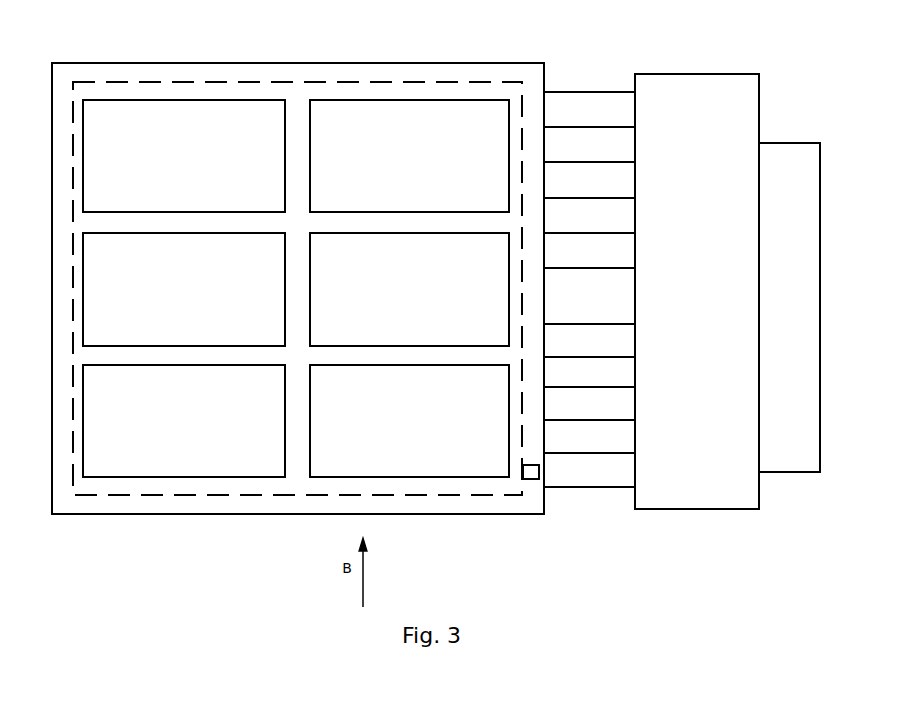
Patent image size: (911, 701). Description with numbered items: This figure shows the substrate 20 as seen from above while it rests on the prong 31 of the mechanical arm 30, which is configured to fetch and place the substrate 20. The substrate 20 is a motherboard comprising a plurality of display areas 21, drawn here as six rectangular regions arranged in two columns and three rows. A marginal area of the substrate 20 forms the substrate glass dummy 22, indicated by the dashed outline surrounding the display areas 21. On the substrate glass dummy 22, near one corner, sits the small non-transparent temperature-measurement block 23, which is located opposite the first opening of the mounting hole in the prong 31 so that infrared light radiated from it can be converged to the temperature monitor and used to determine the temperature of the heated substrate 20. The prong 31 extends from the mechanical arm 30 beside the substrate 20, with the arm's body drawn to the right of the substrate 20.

The substrate 20 is at (297, 62).
The display area 21 is at (175, 127).
The substrate glass dummy 22 is at (382, 75).
The non-transparent temperature-measurement block 23 is at (528, 480).
The mechanical arm 30 is at (663, 498).
The prong 31 is at (598, 472).